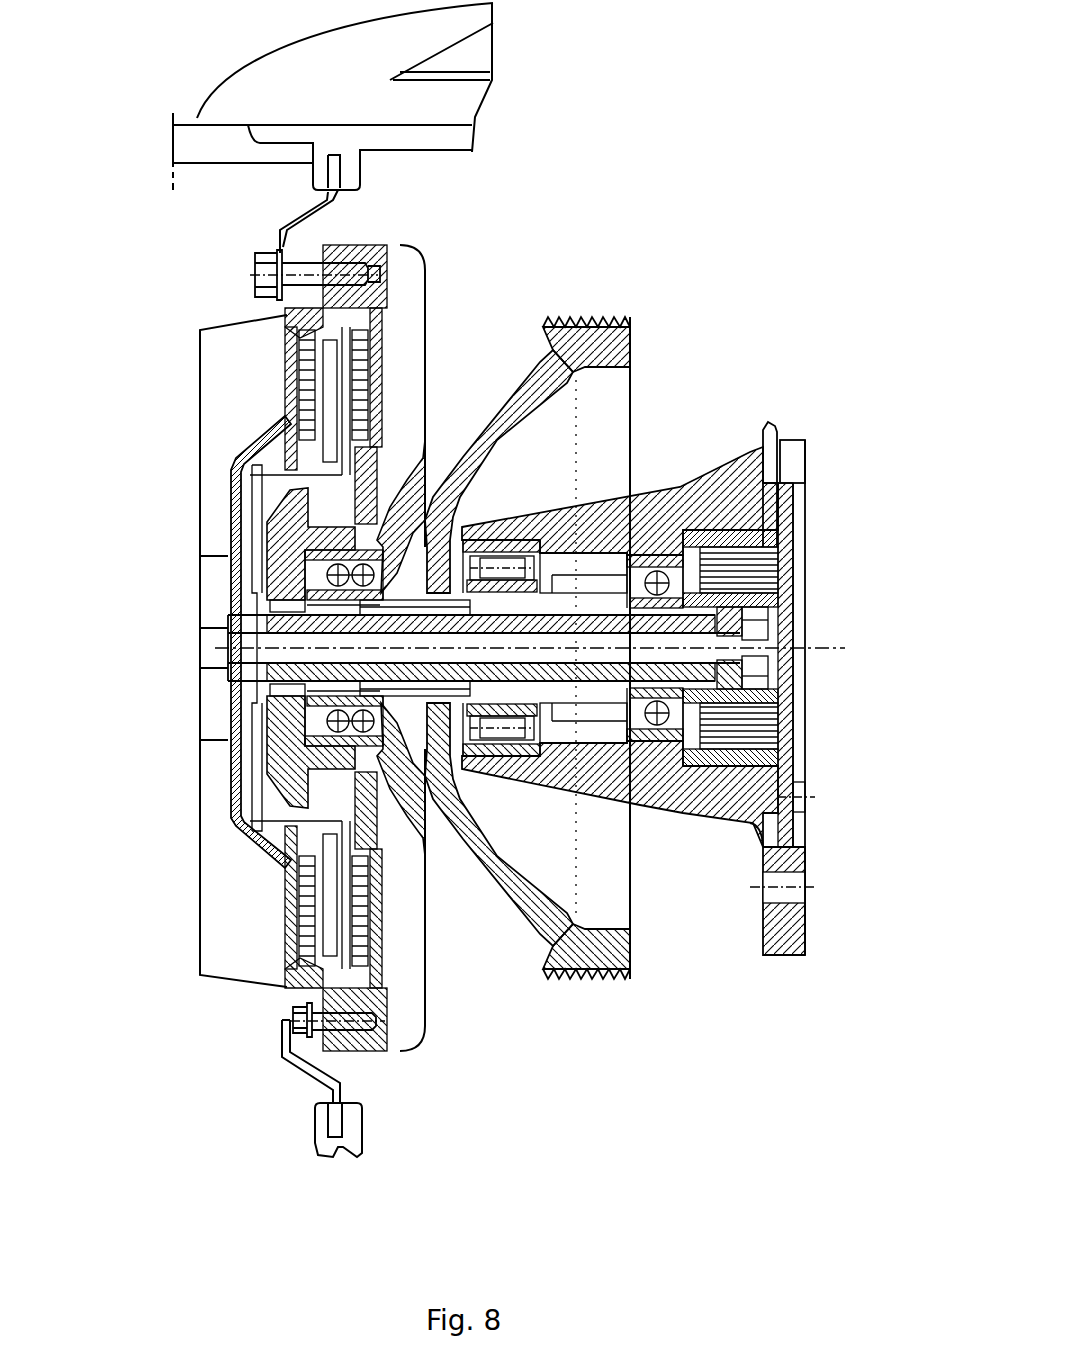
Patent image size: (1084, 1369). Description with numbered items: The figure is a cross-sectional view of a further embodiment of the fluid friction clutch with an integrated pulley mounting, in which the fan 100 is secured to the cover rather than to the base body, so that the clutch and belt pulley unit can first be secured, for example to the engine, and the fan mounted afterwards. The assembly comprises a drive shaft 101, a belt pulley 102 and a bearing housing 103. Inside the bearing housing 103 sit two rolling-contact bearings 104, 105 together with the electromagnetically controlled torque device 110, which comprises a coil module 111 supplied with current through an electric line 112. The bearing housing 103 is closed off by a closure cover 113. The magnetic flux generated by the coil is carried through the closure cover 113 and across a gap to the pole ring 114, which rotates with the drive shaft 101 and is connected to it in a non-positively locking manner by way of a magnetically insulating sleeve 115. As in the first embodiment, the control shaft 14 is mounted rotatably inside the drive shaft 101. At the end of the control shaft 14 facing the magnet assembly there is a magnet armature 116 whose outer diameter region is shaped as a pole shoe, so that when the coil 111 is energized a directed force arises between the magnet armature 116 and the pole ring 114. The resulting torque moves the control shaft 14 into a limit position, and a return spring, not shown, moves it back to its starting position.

The control shaft 14 is at (267, 650).
The fan 100 is at (443, 20).
The drive shaft 101 is at (610, 600).
The belt pulley 102 is at (580, 313).
The bearing housing 103 is at (657, 517).
The rolling-contact bearing 104 is at (506, 757).
The rolling-contact bearing 105 is at (650, 807).
The electromagnetically controlled torque device 110 is at (737, 517).
The coil module 111 is at (775, 438).
The electric line 112 is at (770, 428).
The closure cover 113 is at (790, 618).
The pole ring 114 is at (735, 622).
The magnetically insulating sleeve 115 is at (780, 740).
The magnet armature 116 is at (742, 630).